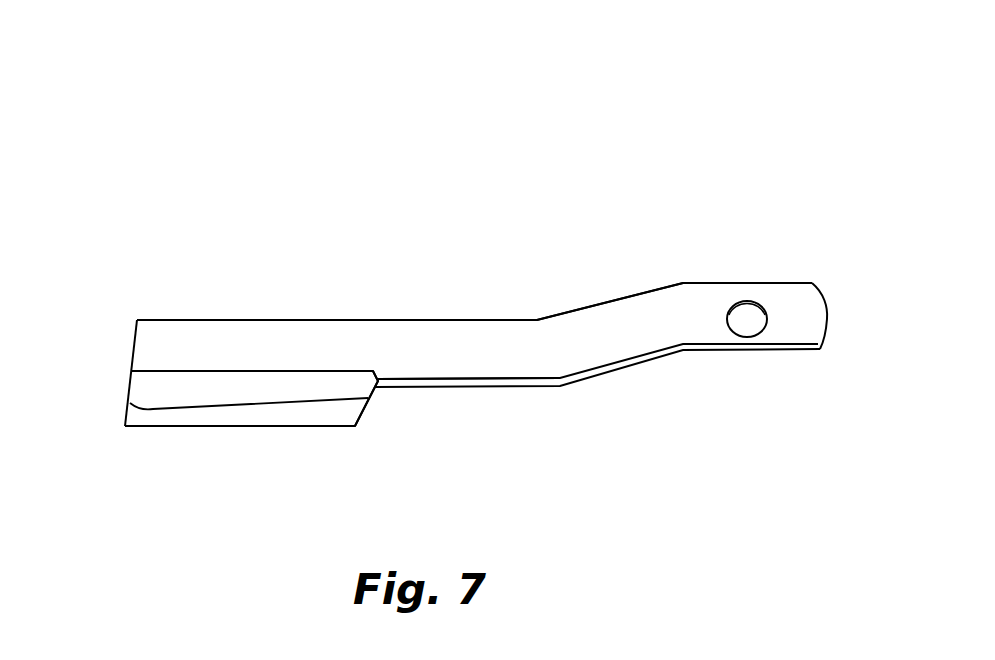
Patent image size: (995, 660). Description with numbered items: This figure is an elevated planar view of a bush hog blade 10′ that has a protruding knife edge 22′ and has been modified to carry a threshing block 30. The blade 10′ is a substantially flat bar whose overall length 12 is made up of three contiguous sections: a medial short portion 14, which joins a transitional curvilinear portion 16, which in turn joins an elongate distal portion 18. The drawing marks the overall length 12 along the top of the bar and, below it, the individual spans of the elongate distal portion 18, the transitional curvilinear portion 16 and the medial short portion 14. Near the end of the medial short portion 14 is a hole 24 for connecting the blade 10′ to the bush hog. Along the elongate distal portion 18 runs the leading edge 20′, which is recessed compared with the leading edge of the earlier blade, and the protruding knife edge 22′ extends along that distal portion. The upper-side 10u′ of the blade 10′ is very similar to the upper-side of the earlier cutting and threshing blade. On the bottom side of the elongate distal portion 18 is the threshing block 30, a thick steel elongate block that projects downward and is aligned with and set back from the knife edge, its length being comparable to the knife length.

The bush hog blade 10′ is at (115, 128).
The overall length 12 is at (820, 203).
The medial short portion 14 is at (828, 262).
The transitional curvilinear portion 16 is at (495, 262).
The elongate distal portion 18 is at (487, 262).
The leading edge 20′ is at (423, 377).
The protruding knife edge 22′ is at (353, 385).
The hole 24 is at (747, 318).
The threshing block 30 is at (192, 412).
The upper-side 10u′ is at (510, 346).